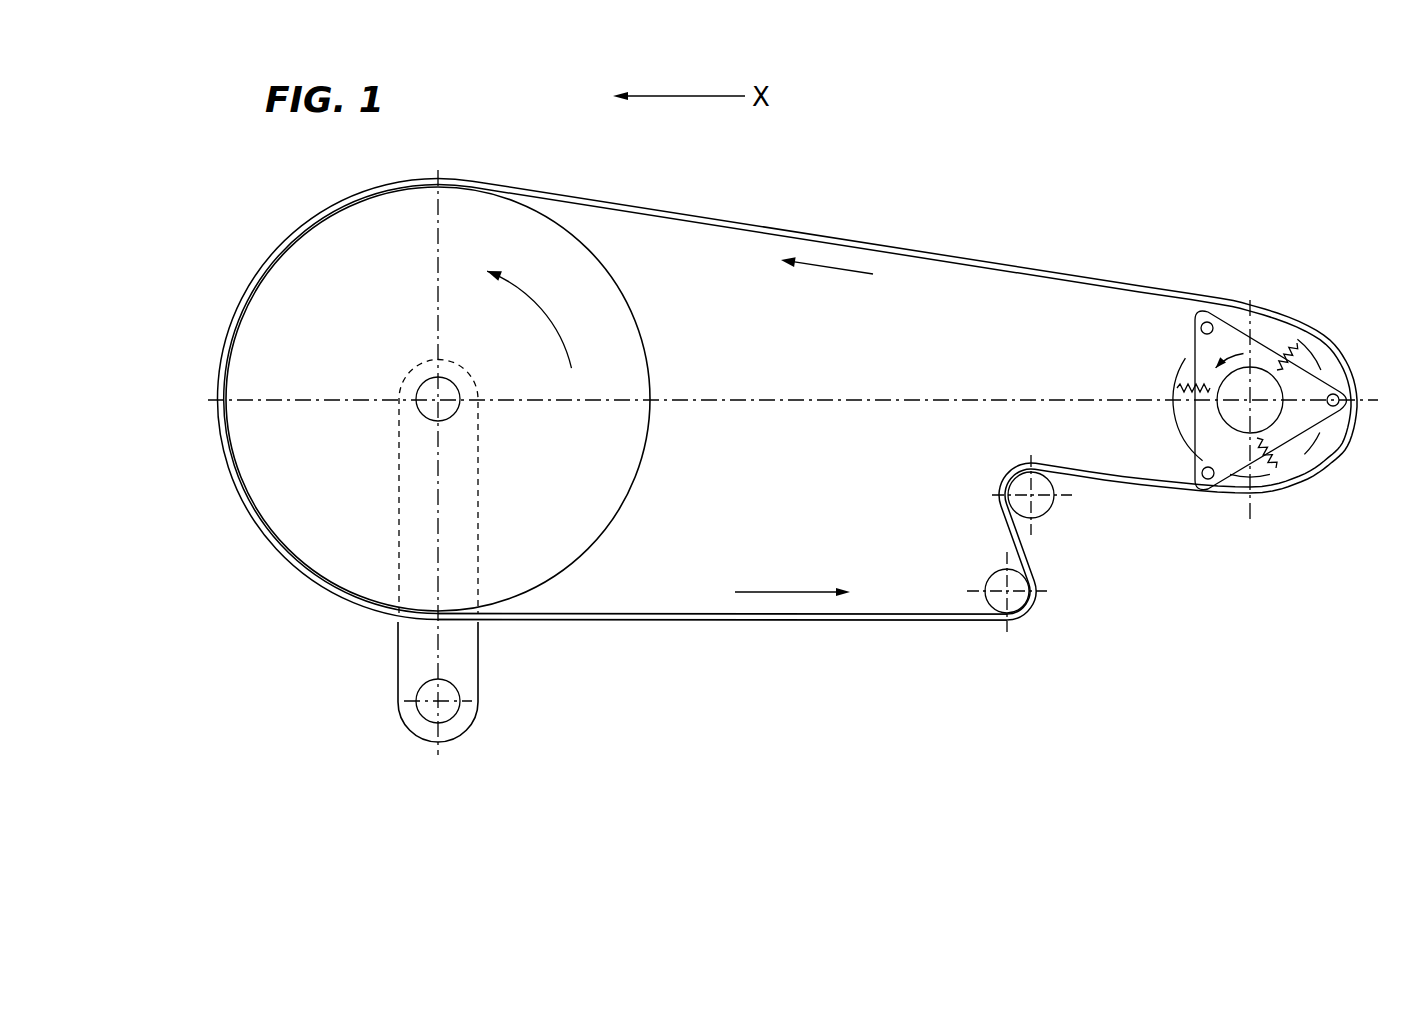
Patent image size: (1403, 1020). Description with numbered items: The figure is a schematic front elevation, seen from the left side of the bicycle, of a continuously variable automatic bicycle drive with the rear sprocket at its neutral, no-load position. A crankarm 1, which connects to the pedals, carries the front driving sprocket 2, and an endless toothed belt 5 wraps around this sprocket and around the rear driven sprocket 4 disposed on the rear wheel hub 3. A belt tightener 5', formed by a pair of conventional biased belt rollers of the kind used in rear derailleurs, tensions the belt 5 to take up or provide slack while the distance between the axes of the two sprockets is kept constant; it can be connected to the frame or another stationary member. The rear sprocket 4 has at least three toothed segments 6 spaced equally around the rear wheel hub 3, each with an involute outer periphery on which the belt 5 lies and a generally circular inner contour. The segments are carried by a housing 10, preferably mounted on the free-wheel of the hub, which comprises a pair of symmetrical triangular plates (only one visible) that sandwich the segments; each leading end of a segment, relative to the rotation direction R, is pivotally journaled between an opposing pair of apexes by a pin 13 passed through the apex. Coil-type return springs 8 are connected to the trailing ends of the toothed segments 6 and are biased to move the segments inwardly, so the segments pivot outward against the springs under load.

The crankarm 1 is at (458, 632).
The front driving sprocket 2 is at (376, 568).
The rear wheel hub 3 is at (1263, 378).
The rear driven sprocket 4 is at (1298, 488).
The belt 5 is at (722, 659).
The belt tightener 5' is at (1021, 579).
The toothed segments 6 is at (1268, 330).
The return springs 8 is at (1190, 371).
The housing 10 is at (1228, 441).
The pin 13 is at (1208, 480).